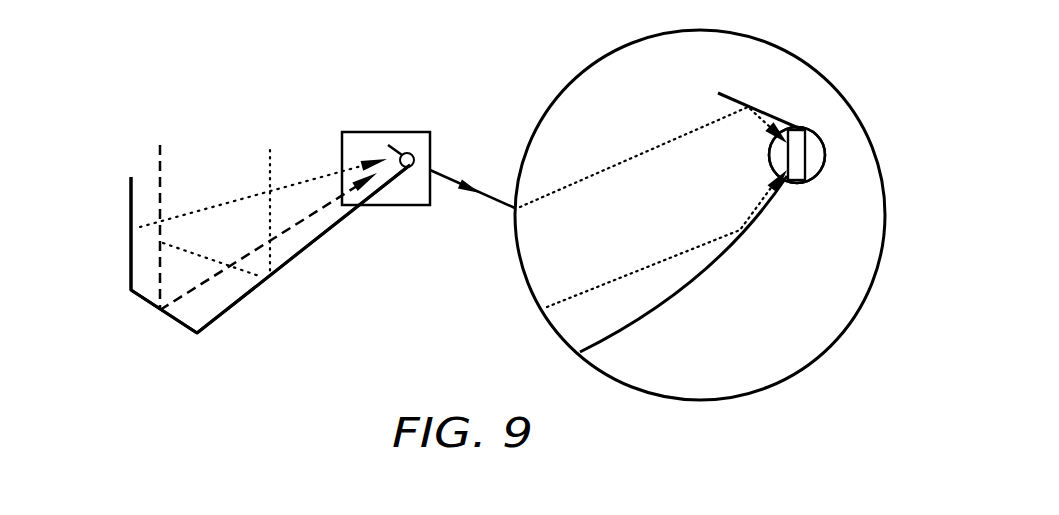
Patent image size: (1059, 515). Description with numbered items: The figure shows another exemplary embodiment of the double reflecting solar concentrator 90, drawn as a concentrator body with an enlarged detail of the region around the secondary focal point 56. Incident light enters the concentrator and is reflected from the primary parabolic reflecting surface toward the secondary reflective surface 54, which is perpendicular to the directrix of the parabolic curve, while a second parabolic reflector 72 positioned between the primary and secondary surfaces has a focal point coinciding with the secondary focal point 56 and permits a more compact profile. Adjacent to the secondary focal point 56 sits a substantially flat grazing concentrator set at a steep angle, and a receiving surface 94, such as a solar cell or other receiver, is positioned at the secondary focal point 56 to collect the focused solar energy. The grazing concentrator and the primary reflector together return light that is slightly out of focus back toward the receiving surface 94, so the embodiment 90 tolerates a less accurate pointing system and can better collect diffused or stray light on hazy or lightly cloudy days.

The double reflecting solar concentrator with grazing concentrator 90 is at (96, 198).
The secondary reflective surface 54 is at (130, 270).
The second parabolic reflector 72 is at (178, 323).
The secondary focal point 56 is at (823, 140).
The receiving surface 94 is at (806, 155).